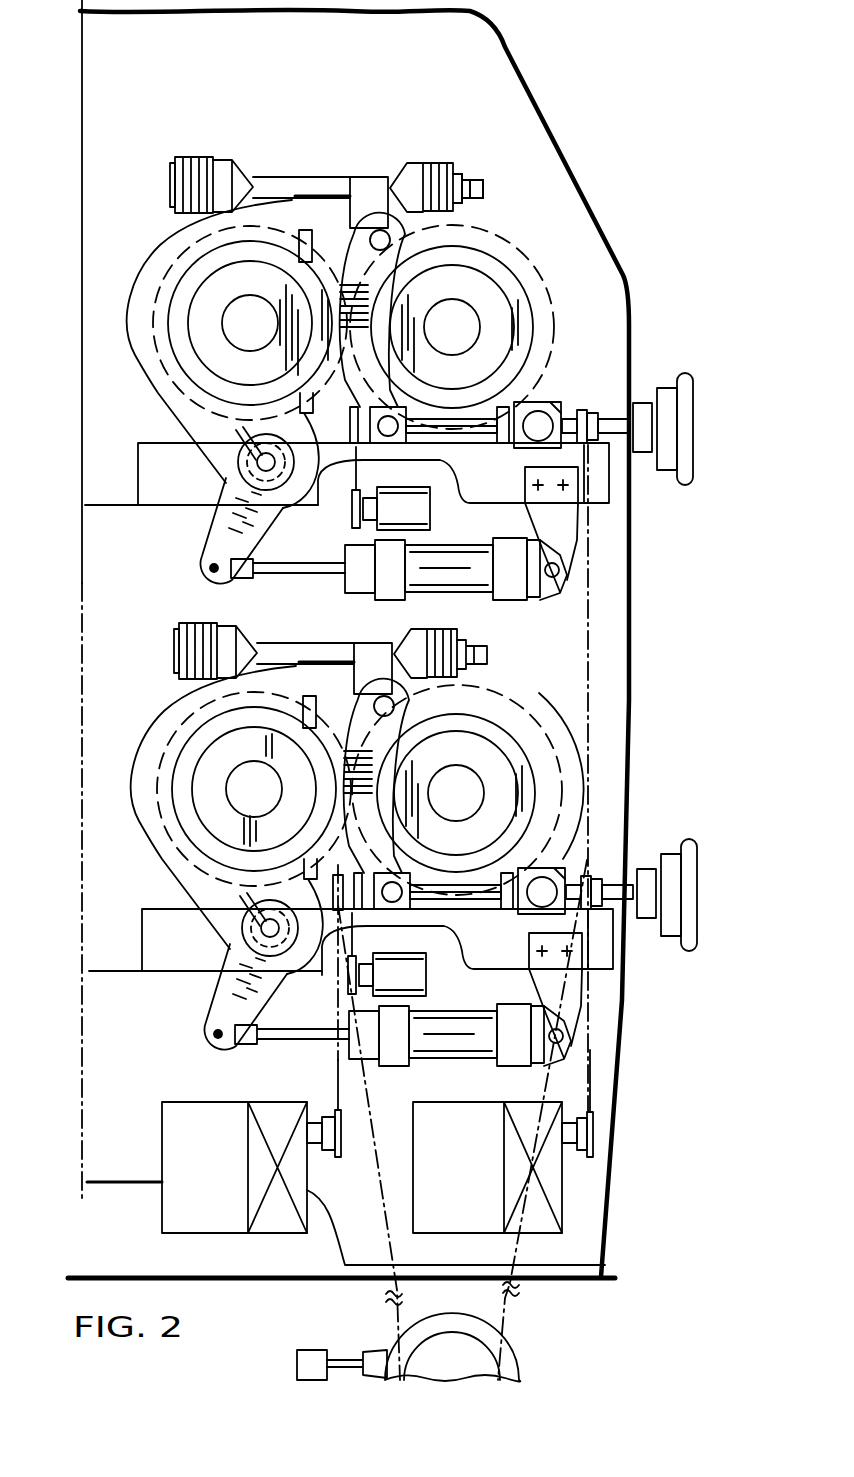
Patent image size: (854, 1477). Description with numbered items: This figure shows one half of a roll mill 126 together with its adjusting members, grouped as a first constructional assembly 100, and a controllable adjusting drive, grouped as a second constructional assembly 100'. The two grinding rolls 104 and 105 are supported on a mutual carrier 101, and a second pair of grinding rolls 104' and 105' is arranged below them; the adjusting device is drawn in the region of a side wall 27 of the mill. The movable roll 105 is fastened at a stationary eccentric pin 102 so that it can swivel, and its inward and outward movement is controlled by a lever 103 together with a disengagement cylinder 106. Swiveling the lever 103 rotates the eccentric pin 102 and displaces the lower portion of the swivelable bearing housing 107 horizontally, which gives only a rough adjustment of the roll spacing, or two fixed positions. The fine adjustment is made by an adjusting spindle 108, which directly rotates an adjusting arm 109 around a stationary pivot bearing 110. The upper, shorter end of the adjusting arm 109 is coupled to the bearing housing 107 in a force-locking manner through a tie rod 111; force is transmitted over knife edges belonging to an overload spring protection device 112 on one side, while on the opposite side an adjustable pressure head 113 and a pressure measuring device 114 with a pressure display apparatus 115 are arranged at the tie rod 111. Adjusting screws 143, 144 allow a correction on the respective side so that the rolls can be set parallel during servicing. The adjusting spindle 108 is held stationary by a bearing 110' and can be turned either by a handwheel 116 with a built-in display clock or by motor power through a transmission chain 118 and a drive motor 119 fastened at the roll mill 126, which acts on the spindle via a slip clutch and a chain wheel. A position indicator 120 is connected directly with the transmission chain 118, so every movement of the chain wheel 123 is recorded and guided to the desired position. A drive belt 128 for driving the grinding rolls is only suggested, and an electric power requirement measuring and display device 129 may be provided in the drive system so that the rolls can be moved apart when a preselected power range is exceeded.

The frame side wall 27 is at (80, 125).
The first constructional assembly 100 is at (180, 354).
The second constructional assembly 100' is at (609, 531).
The carrier 101 is at (157, 493).
The eccentric pin 102 is at (256, 462).
The lever 103 is at (207, 543).
The grinding roll 104 is at (517, 297).
The grinding roll 104' is at (536, 790).
The grinding roll 105 is at (182, 322).
The grinding roll 105' is at (184, 768).
The disengagement cylinder 106 is at (510, 573).
The swivelable bearing housing 107 is at (173, 403).
The adjusting spindle 108 is at (460, 423).
The adjusting arm 109 is at (405, 280).
The pivot bearing 110 is at (350, 238).
The bearing 110' is at (604, 378).
The tie rod 111 is at (307, 180).
The overload spring protection device 112 is at (160, 183).
The adjustable pressure head 113 is at (410, 167).
The pressure measuring device 114 is at (460, 173).
The pressure display apparatus 115 is at (460, 173).
The handwheel 116 is at (688, 482).
The transmission chain 118 is at (337, 1050).
The drive motor 119 is at (218, 1168).
The position indicator 120 is at (434, 982).
The chain wheel 123 is at (161, 924).
The roll mill 126 is at (631, 700).
The drive belt 128 is at (504, 1323).
The electric power requirement measuring and display device 129 is at (308, 1358).
The adjusting screw 143 is at (460, 173).
The adjusting screw 144 is at (460, 173).